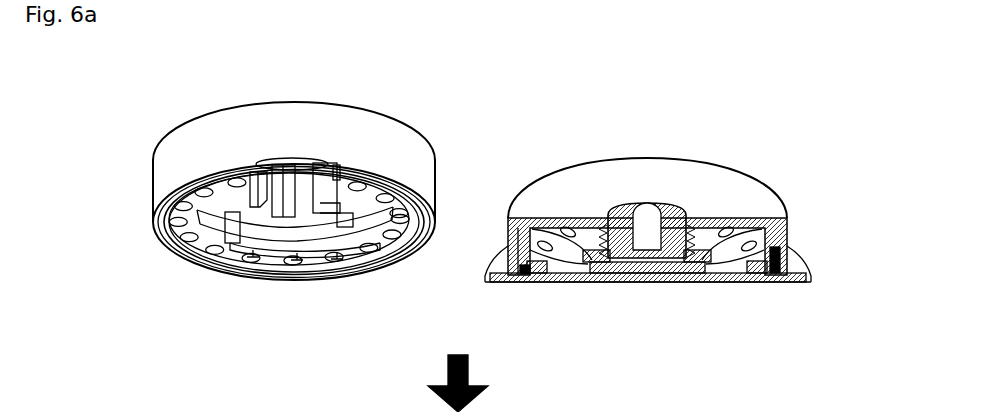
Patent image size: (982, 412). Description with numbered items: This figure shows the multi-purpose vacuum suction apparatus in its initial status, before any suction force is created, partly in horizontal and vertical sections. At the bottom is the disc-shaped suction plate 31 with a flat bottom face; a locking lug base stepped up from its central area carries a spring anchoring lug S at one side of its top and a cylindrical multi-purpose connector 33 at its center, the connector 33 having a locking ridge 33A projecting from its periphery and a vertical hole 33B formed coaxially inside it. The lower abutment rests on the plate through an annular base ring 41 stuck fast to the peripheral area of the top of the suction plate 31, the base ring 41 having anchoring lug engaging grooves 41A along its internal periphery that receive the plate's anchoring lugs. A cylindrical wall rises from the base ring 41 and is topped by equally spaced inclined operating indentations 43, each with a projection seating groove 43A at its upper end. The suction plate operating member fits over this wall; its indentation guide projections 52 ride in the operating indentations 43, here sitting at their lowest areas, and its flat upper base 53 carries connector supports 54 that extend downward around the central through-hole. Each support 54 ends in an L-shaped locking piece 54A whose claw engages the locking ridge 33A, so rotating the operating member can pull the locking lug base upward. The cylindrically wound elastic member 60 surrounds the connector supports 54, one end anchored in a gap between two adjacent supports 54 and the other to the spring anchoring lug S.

The suction plate 31 is at (740, 273).
The multi-purpose connector 33 is at (672, 203).
The locking ridge 33A is at (622, 273).
The vertical hole 33B is at (647, 222).
The annular base ring 41 is at (318, 242).
The anchoring lug engaging grooves 41A is at (365, 268).
The inclined operating indentations 43 is at (365, 200).
The projection seating groove 43A is at (360, 195).
The indentation guide projections 52 is at (247, 252).
The upper base 53 is at (258, 112).
The connector supports 54 is at (230, 205).
The locking piece 54A is at (185, 190).
The elastic member 60 is at (700, 272).
The spring anchoring lug S is at (718, 272).